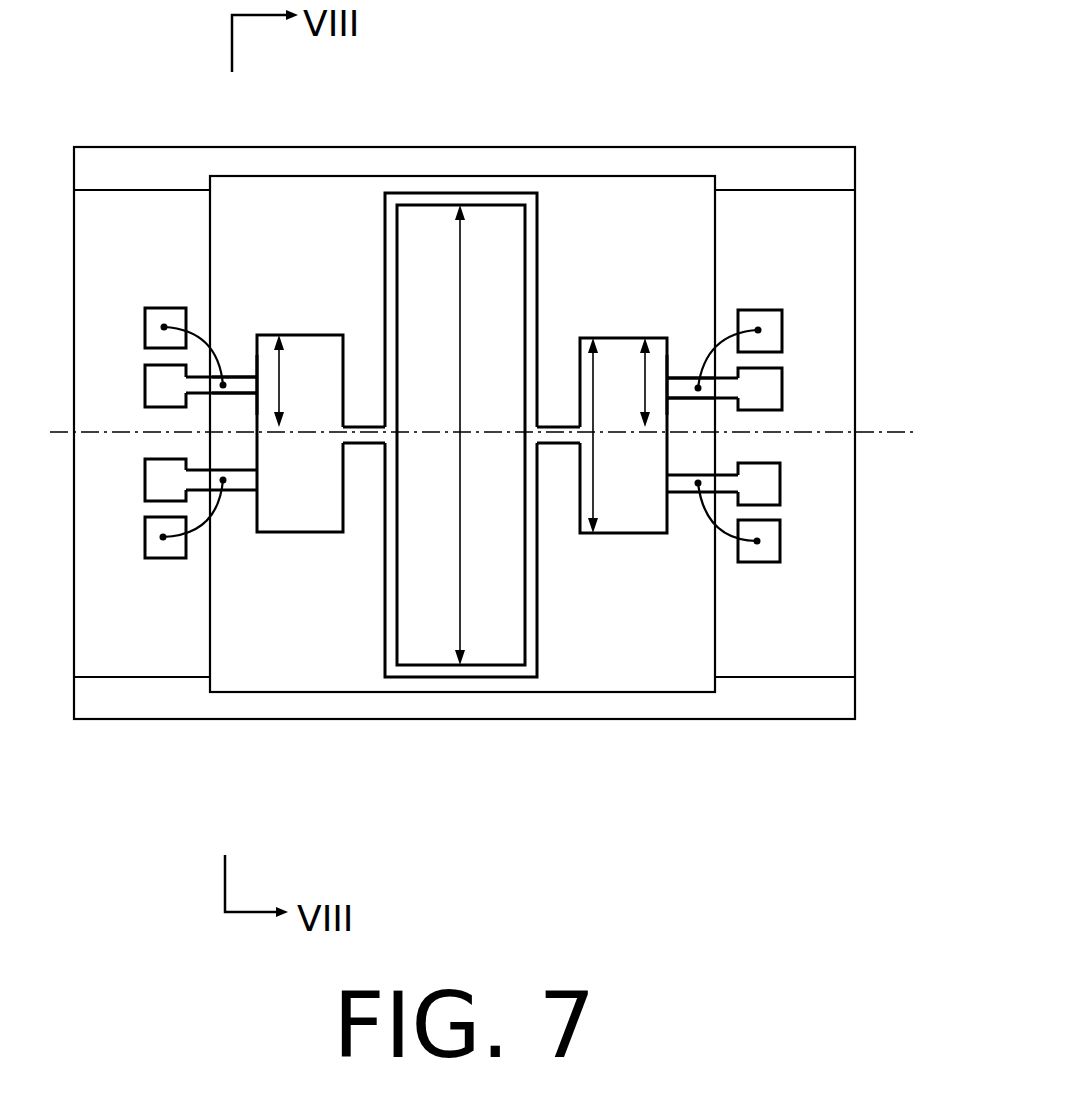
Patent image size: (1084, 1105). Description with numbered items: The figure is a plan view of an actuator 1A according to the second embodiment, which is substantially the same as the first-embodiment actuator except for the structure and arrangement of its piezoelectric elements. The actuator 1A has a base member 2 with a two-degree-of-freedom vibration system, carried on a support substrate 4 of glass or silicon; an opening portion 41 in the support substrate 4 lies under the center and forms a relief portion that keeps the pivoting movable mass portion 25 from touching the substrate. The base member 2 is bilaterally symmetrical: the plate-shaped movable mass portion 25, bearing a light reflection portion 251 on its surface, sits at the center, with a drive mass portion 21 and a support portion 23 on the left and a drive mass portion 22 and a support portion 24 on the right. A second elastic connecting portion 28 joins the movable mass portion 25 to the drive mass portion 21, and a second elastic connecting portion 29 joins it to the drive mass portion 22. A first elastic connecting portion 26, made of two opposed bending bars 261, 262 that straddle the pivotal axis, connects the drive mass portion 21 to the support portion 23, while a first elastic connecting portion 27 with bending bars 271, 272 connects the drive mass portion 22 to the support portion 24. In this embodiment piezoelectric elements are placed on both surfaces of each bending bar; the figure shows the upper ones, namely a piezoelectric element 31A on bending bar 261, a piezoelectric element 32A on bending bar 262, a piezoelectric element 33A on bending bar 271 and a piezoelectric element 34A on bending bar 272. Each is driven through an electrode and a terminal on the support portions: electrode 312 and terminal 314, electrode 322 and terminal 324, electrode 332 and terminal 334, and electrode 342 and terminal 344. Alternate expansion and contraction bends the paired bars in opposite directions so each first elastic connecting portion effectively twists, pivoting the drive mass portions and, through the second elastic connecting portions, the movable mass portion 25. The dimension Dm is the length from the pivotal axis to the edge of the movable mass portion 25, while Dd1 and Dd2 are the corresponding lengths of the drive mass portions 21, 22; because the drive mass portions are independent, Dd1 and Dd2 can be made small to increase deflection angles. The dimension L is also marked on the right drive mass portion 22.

The actuator 1A is at (756, 82).
The base member 2 is at (864, 297).
The support substrate 4 is at (245, 700).
The opening portion 41 is at (300, 670).
The drive mass portion 21 is at (310, 507).
The drive mass portion 22 is at (618, 515).
The support portion 23 is at (145, 652).
The support portion 24 is at (787, 658).
The movable mass portion 25 is at (413, 672).
The light reflection portion 251 is at (457, 645).
The first elastic connecting portion 26 is at (332, 275).
The bending bar 261 is at (252, 385).
The bending bar 262 is at (231, 377).
The first elastic connecting portion 27 is at (710, 280).
The bending bar 271 is at (698, 385).
The bending bar 272 is at (681, 378).
The second elastic connecting portion 28 is at (360, 425).
The second elastic connecting portion 29 is at (553, 425).
The piezoelectric element 31A is at (241, 490).
The piezoelectric element 32A is at (220, 390).
The piezoelectric element 33A is at (698, 392).
The piezoelectric element 34A is at (698, 486).
The electrode 312 is at (157, 480).
The terminal 314 is at (156, 545).
The electrode 322 is at (157, 385).
The terminal 324 is at (153, 322).
The electrode 332 is at (768, 487).
The terminal 334 is at (768, 556).
The electrode 342 is at (765, 388).
The terminal 344 is at (772, 330).
The length of movable mass portion Dm is at (440, 435).
The length of drive mass portion 21 Dd1 is at (305, 381).
The length of drive mass portion 22 Dd2 is at (629, 382).
The length of second detection section L is at (601, 435).